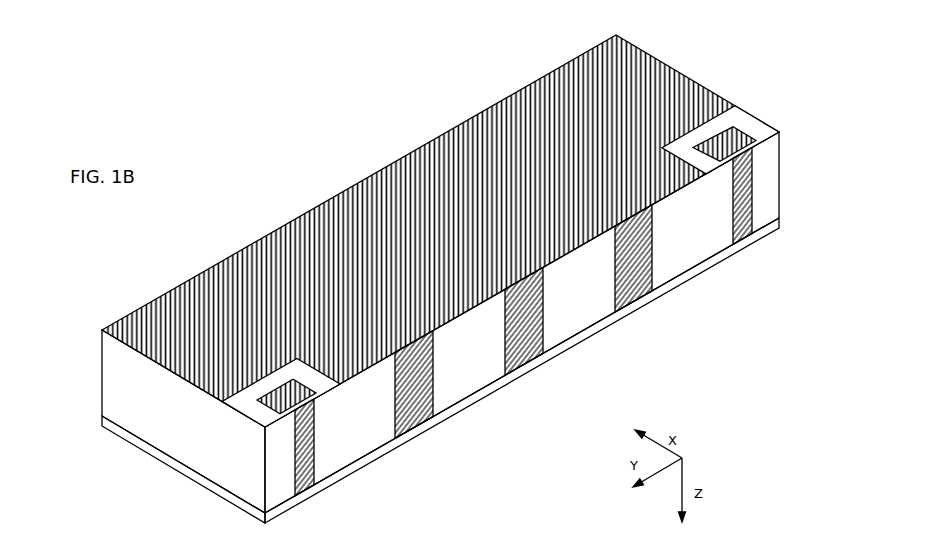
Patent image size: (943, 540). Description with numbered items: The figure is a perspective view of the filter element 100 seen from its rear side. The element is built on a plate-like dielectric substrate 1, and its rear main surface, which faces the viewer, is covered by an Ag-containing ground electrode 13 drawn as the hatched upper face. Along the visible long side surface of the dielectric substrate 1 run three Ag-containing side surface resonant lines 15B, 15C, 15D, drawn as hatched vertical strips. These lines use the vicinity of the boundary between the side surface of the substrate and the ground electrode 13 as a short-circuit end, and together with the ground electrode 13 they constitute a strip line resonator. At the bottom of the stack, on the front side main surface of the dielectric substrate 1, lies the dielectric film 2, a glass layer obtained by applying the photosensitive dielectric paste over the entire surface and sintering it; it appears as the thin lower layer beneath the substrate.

The filter element 100 is at (410, 271).
The dielectric substrate 1 is at (117, 367).
The dielectric film 2 is at (101, 425).
The ground electrode 13 is at (312, 210).
The side resonant line 15B is at (421, 443).
The side resonant line 15C is at (530, 380).
The side resonant line 15D is at (642, 320).